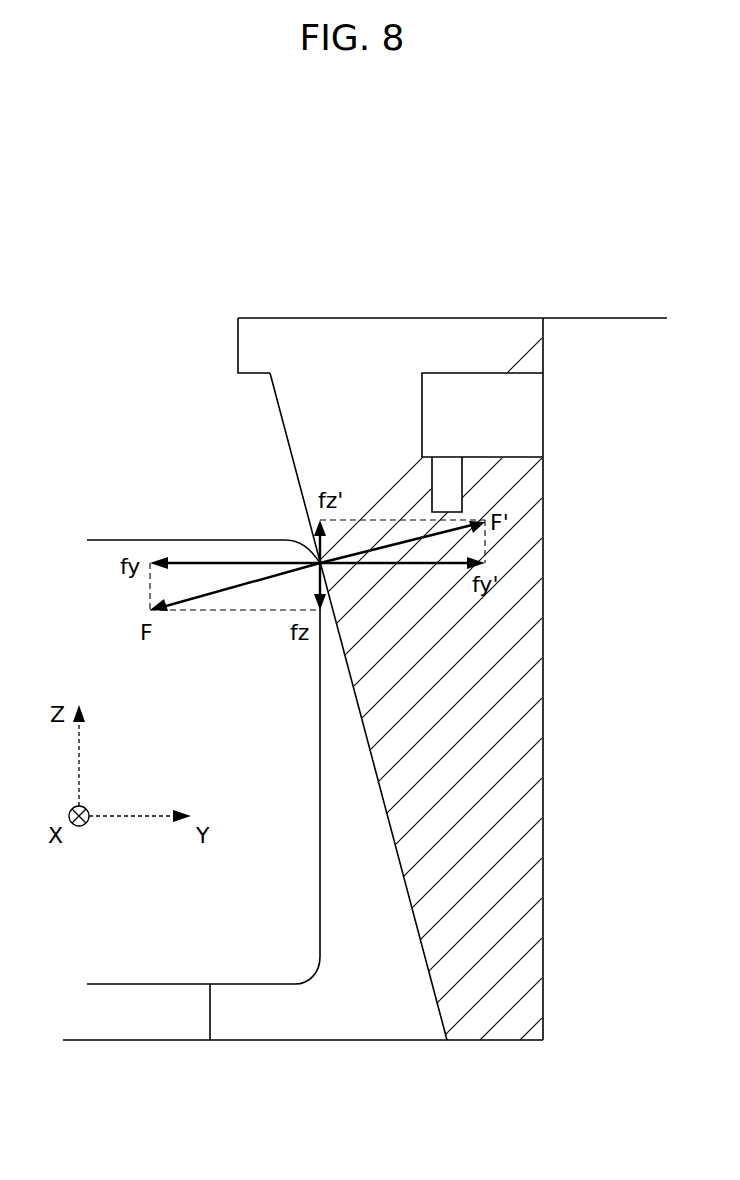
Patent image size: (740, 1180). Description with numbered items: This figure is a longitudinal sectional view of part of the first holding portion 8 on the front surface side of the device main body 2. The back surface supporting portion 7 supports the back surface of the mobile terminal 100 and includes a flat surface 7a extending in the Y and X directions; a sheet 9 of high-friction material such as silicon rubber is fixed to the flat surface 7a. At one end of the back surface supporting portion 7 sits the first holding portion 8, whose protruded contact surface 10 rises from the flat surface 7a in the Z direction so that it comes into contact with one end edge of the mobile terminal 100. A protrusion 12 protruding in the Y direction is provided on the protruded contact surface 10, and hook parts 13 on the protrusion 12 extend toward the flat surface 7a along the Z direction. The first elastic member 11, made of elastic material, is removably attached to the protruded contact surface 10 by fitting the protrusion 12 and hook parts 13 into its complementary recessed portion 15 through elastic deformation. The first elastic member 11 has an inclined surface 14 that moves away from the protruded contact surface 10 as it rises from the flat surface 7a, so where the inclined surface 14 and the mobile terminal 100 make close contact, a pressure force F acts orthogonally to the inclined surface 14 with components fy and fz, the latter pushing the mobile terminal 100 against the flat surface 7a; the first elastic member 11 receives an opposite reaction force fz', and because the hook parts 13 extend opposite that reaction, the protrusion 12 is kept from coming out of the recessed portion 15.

The device main body 2 is at (605, 306).
The first holding portion 8 is at (408, 213).
The protruded contact surface 10 is at (540, 335).
The first elastic member 11 is at (314, 306).
The protrusion 12 is at (422, 410).
The hook parts 13 is at (432, 472).
The inclined surface 14 is at (374, 770).
The recessed portion 15 is at (543, 440).
The mobile terminal 100 is at (150, 526).
The back surface supporting portion 7 is at (116, 970).
The sheet 9 is at (178, 984).
The flat surface 7a is at (243, 1040).